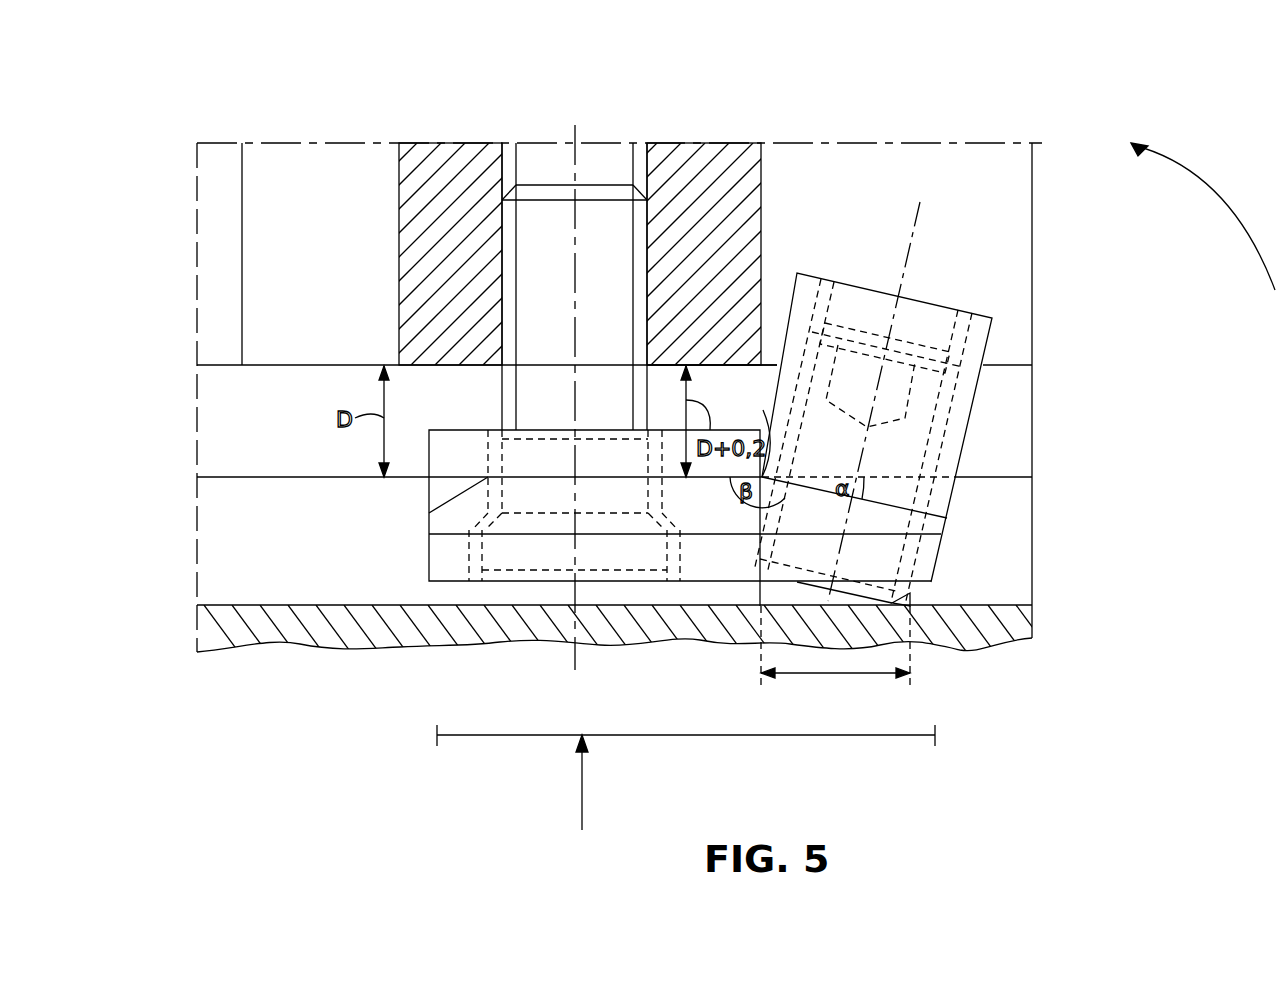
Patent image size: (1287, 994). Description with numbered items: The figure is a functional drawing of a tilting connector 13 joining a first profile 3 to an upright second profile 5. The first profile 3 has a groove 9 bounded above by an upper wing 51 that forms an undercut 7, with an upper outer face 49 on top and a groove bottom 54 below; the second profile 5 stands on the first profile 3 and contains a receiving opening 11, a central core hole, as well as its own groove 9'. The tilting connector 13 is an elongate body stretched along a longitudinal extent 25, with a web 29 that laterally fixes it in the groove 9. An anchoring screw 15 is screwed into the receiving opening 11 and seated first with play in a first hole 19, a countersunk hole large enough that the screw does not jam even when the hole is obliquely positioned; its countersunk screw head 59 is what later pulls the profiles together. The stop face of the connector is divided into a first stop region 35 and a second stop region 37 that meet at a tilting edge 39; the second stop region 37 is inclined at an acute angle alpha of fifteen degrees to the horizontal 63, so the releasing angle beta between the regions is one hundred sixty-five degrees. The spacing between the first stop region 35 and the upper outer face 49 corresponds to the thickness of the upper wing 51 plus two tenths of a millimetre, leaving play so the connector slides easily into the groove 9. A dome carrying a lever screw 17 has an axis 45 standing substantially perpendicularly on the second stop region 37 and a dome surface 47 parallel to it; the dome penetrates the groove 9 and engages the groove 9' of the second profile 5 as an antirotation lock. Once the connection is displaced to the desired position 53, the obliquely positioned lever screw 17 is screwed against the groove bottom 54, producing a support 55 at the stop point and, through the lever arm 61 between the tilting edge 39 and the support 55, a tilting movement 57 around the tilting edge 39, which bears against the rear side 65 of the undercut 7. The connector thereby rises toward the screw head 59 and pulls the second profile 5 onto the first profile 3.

The first profile 3 is at (190, 380).
The second profile 5 is at (1038, 130).
The undercut 7 is at (207, 479).
The groove 9 is at (1015, 455).
The groove of the second profile 9' is at (1047, 327).
The receiving opening 11 is at (597, 155).
The tilting connector 13 is at (826, 257).
The anchoring screw 15 is at (543, 265).
The lever screw 17 is at (915, 345).
The first hole 19 is at (480, 553).
The longitudinal extent 25 is at (873, 738).
The web 29 is at (460, 431).
The first stop region 35 is at (490, 474).
The second stop region 37 is at (935, 507).
The tilting edge 39 is at (763, 410).
The axis 45 is at (893, 323).
The dome surface 47 is at (960, 436).
The upper outer face 49 is at (733, 380).
The upper wing 51 is at (330, 372).
The desired position 53 is at (582, 790).
The groove bottom 54 is at (1010, 605).
The support 55 is at (903, 613).
The tilting movement 57 is at (490, 522).
The countersunk screw head 59 is at (540, 556).
The lever arm 61 is at (835, 660).
The horizontal 63 is at (880, 477).
The rear side 65 is at (1013, 477).